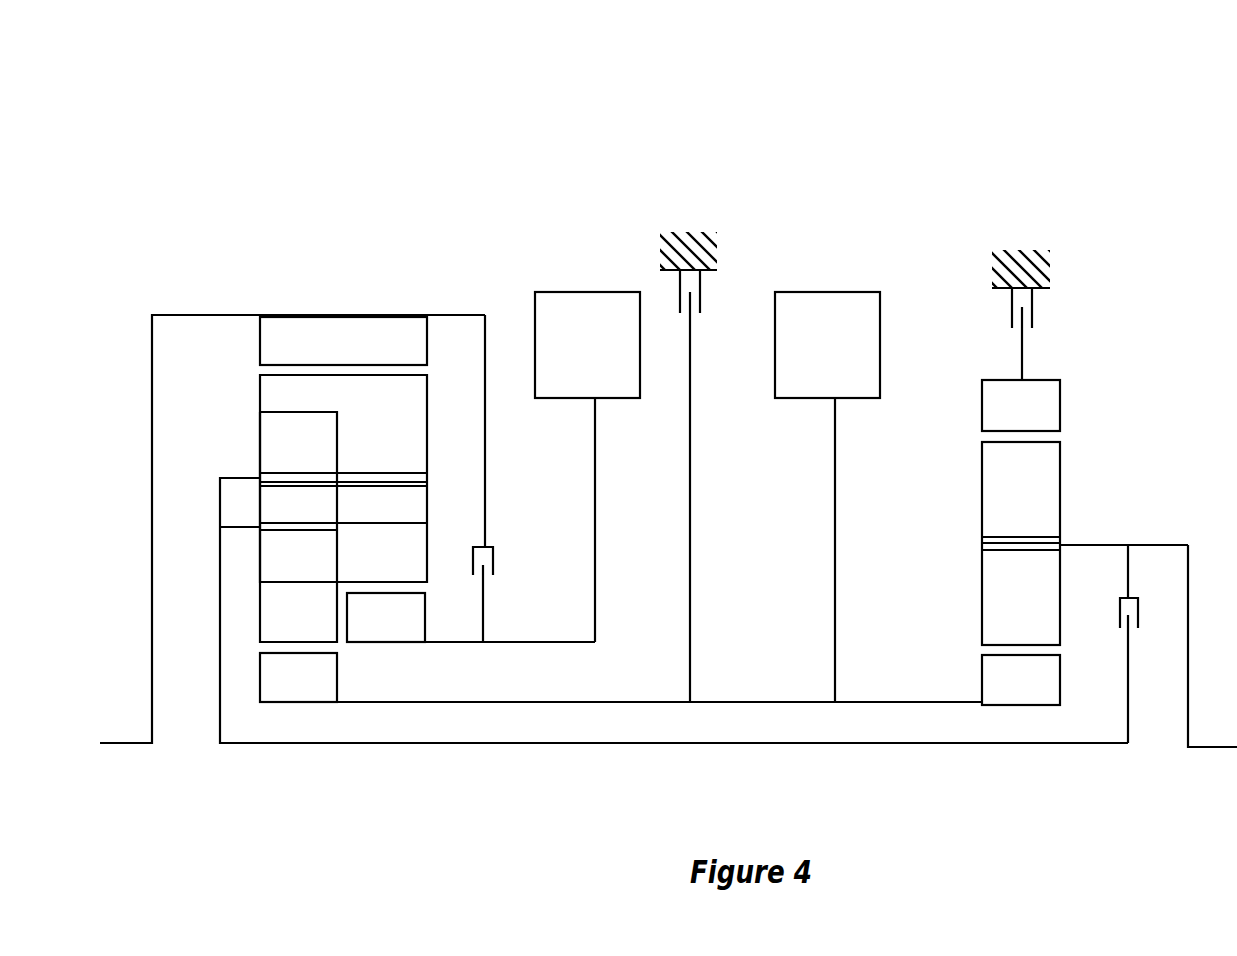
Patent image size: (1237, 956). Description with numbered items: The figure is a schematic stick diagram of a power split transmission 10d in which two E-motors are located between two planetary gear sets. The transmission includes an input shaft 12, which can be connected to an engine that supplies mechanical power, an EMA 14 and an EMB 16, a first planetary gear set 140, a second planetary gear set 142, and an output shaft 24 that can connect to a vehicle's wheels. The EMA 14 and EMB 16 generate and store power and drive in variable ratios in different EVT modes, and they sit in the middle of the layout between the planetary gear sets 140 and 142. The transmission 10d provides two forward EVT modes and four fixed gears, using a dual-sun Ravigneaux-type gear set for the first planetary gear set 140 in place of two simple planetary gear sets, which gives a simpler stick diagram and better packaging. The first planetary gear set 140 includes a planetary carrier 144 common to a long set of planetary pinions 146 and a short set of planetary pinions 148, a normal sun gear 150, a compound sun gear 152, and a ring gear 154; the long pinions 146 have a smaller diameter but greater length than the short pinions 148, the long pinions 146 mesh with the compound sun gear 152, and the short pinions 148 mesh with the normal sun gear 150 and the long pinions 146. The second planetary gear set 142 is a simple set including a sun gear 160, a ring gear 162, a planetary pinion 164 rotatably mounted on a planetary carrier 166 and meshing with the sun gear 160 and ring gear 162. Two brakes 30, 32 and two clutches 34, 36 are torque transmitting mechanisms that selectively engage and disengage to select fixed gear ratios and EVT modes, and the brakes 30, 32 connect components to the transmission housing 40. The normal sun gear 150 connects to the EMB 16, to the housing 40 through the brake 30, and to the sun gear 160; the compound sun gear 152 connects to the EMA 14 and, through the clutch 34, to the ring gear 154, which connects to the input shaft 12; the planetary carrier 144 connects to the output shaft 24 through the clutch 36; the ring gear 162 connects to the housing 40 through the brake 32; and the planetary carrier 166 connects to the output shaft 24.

The power split transmission 10d is at (777, 112).
The input shaft 12 is at (133, 743).
The EMA 14 is at (598, 290).
The EMB 16 is at (828, 290).
The output shaft 24 is at (1233, 750).
The brake 30 is at (722, 295).
The brake 32 is at (1053, 313).
The clutch 34 is at (505, 555).
The clutch 36 is at (1152, 618).
The transmission housing 40 is at (688, 220).
The first planetary gear set 140 is at (650, 483).
The second planetary gear set 142 is at (1055, 542).
The planetary carrier 144 is at (217, 503).
The long set of planetary pinions 146 is at (427, 407).
The short set of planetary pinions 148 is at (258, 447).
The normal sun gear 150 is at (255, 678).
The compound sun gear 152 is at (383, 645).
The ring gear 154 is at (258, 340).
The sun gear 160 is at (980, 680).
The ring gear 162 is at (980, 405).
The planetary pinion 164 is at (980, 507).
The planetary carrier 166 is at (1090, 542).